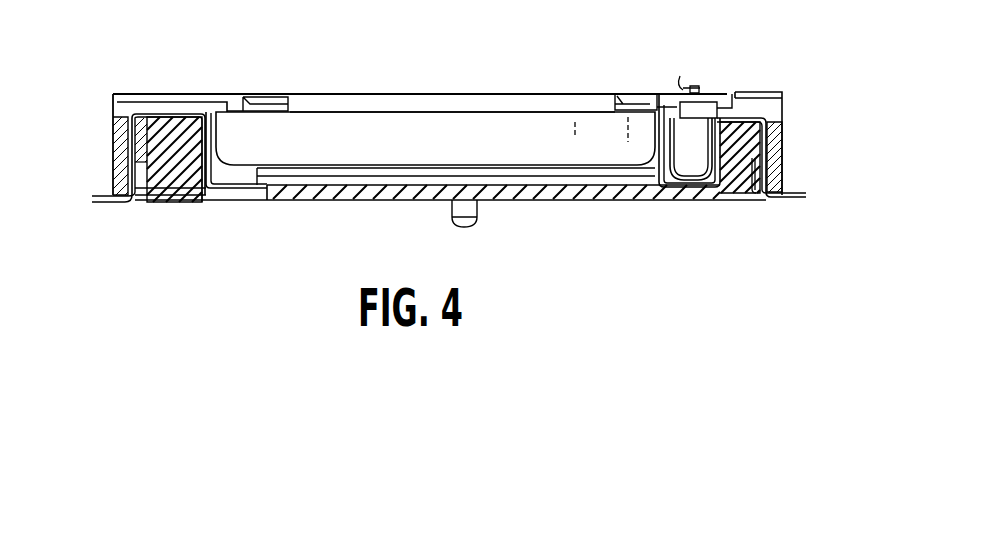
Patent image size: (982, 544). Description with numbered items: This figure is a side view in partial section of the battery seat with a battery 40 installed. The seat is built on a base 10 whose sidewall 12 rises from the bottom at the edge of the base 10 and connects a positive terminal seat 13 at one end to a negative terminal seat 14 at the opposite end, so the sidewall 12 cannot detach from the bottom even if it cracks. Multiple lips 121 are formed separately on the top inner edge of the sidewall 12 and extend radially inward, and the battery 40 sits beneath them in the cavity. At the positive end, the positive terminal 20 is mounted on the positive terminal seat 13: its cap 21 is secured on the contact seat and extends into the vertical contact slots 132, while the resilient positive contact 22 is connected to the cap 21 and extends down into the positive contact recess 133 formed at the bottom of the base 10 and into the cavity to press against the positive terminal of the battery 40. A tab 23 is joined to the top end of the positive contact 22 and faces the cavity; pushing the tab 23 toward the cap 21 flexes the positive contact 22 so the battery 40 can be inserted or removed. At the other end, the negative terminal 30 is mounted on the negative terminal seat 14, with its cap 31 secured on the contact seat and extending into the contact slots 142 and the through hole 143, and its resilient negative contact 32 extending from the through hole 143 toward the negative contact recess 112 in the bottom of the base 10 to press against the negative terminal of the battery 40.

The base 10 is at (518, 243).
The sidewall 12 is at (553, 95).
The positive terminal seat 13 is at (778, 91).
The negative terminal seat 14 is at (113, 96).
The positive terminal 20 is at (727, 43).
The cap 21 is at (757, 119).
The positive contact 22 is at (668, 172).
The tab 23 is at (697, 86).
The negative terminal 30 is at (177, 93).
The cap 31 is at (168, 115).
The negative contact 32 is at (292, 193).
The battery 40 is at (443, 115).
The negative contact recess 112 is at (370, 178).
The lips 121 is at (270, 94).
The contact slots 132 is at (775, 147).
The positive contact recess 133 is at (705, 190).
The contact slots 142 is at (125, 142).
The through hole 143 is at (240, 197).